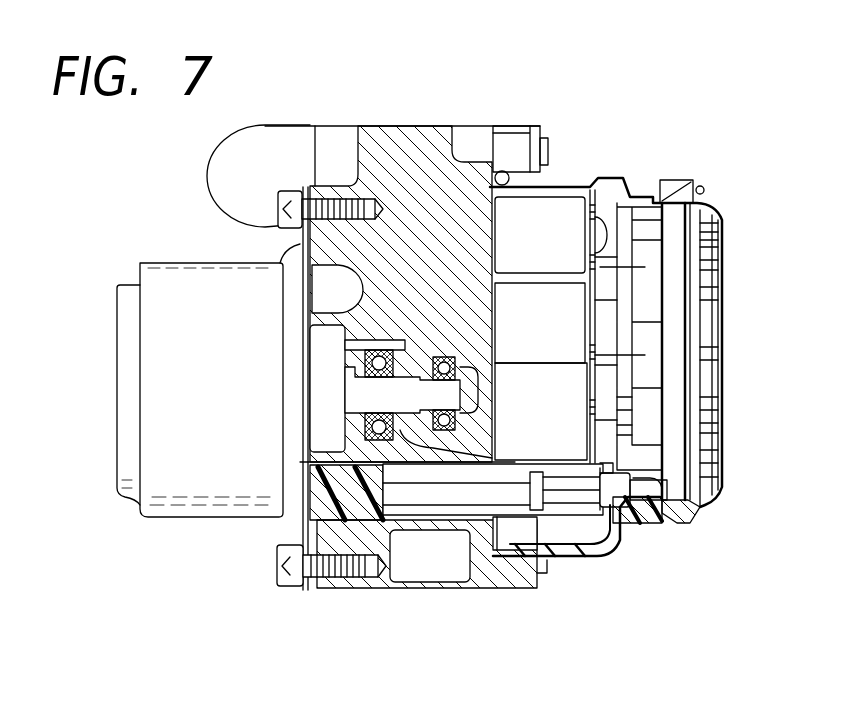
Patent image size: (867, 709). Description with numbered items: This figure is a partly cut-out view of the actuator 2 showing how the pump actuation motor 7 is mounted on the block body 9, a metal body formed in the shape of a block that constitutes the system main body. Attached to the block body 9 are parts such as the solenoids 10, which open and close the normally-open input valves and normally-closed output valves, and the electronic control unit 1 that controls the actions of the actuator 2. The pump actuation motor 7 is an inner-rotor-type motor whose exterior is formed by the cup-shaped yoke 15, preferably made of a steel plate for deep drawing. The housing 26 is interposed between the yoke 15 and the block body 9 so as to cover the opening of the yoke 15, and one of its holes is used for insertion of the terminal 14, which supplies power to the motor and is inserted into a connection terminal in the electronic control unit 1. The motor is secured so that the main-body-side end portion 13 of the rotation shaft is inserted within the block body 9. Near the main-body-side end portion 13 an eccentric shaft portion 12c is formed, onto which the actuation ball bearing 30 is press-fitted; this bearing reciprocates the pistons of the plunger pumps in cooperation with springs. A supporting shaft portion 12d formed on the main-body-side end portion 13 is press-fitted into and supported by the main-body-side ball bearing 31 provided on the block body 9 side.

The electronic control unit 1 is at (676, 227).
The actuator 2 is at (520, 86).
The pump actuation motor 7 is at (211, 525).
The block body 9 is at (437, 125).
The solenoids 10 is at (553, 297).
The eccentric shaft portion 12c is at (372, 392).
The supporting shaft portion 12d is at (432, 398).
The main-body-side end portion 13 is at (402, 340).
The terminal 14 is at (483, 492).
The yoke 15 is at (192, 263).
The housing 26 is at (322, 402).
The actuation ball bearing 30 is at (367, 580).
The main-body-side ball bearing 31 is at (487, 453).